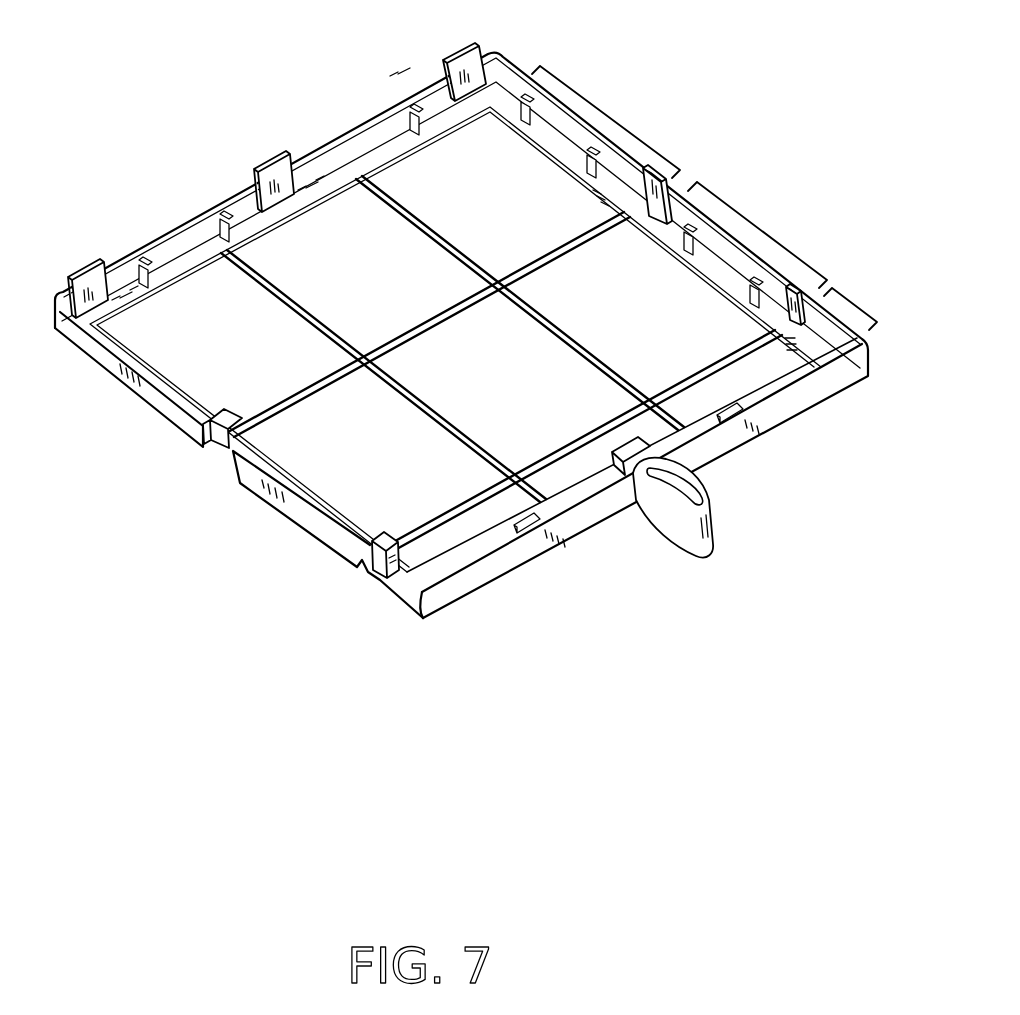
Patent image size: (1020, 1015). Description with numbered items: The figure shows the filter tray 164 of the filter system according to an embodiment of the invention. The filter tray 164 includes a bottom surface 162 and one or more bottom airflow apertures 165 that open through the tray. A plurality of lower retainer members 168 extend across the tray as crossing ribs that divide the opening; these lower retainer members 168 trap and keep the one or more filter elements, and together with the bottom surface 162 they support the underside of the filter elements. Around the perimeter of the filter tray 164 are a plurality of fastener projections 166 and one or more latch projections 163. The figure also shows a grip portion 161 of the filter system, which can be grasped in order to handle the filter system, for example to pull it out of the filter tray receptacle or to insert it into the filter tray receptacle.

The grip portion 161 is at (715, 548).
The bottom surface 162 is at (380, 153).
The latch projections 163 is at (377, 580).
The filter tray 164 is at (500, 582).
The bottom airflow apertures 165 is at (614, 117).
The fastener projections 166 is at (458, 58).
The lower retainer members 168 is at (457, 246).